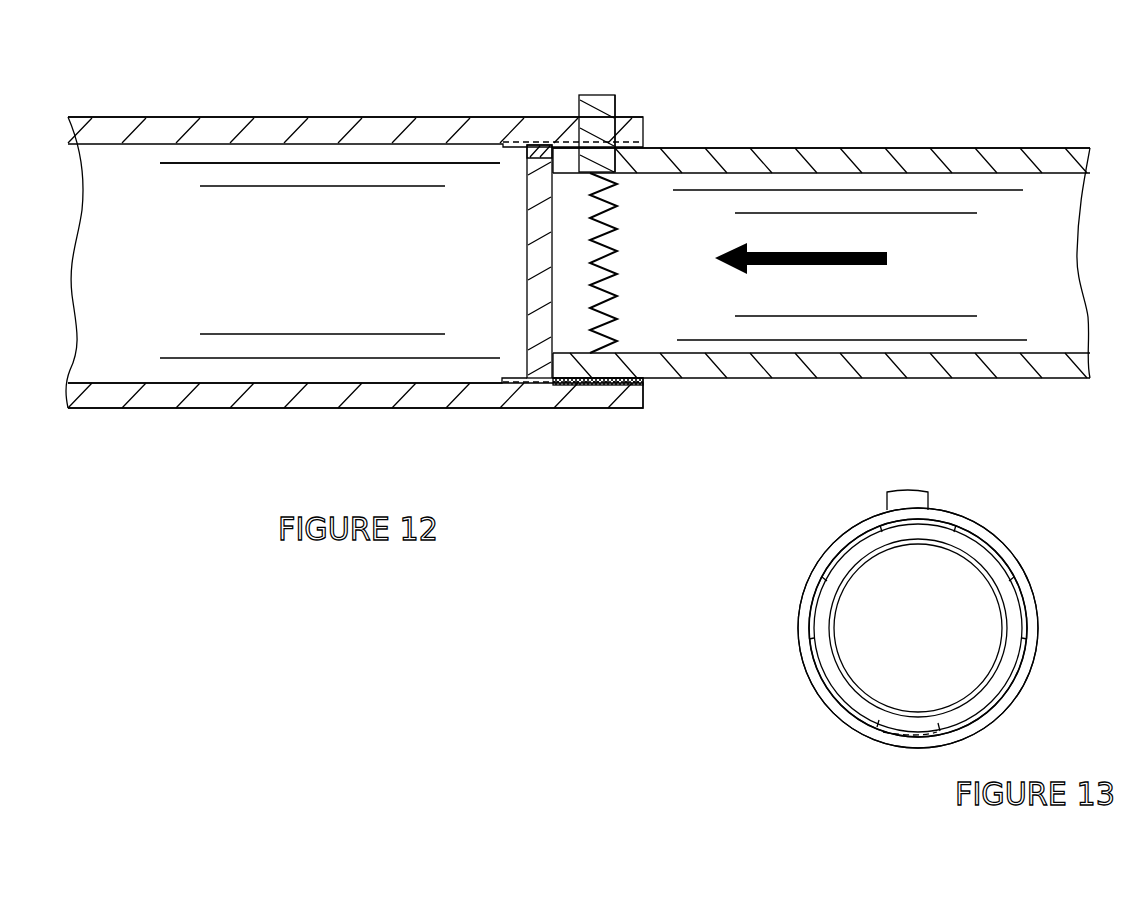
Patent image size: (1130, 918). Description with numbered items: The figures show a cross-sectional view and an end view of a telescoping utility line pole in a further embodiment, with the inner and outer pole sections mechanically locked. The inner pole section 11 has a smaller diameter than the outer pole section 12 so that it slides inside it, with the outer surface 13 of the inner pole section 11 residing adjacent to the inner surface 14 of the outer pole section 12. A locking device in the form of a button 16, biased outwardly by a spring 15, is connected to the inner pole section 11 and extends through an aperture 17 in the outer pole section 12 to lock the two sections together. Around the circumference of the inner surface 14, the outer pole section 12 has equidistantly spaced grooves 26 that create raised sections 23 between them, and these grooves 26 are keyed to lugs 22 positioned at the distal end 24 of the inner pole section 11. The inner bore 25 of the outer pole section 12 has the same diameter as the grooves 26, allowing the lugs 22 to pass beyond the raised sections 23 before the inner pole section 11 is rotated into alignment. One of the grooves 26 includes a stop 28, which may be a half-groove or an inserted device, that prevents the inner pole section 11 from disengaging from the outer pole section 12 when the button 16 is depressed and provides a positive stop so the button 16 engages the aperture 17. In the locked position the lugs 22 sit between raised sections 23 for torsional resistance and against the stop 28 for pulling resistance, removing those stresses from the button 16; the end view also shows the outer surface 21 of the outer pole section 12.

In FIG. 12, the inner pole section 11 is at (733, 158).
In FIG. 13, the inner pole section 11 is at (982, 555).
In FIG. 12, the outer pole section 12 is at (322, 132).
In FIG. 13, the outer pole section 12 is at (812, 687).
In FIG. 12, the outer surface 13 is at (870, 148).
In FIG. 12, the inner surface 14 is at (385, 396).
In FIG. 12, the spring 15 is at (612, 273).
In FIG. 12, the button 16 is at (612, 100).
In FIG. 13, the button 16 is at (925, 492).
In FIG. 12, the aperture 17 is at (615, 117).
In FIG. 12, the outer surface of second tube 21 is at (427, 117).
In FIG. 12, the lugs 22 is at (538, 360).
In FIG. 13, the lugs 22 is at (817, 612).
In FIG. 12, the raised sections 23 is at (575, 157).
In FIG. 13, the raised sections 23 is at (843, 542).
In FIG. 12, the distal end 24 is at (557, 380).
In FIG. 12, the inner bore 25 is at (216, 220).
In FIG. 13, the grooves 26 is at (1025, 597).
In FIG. 12, the stop 28 is at (597, 384).
In FIG. 13, the stop 28 is at (903, 740).